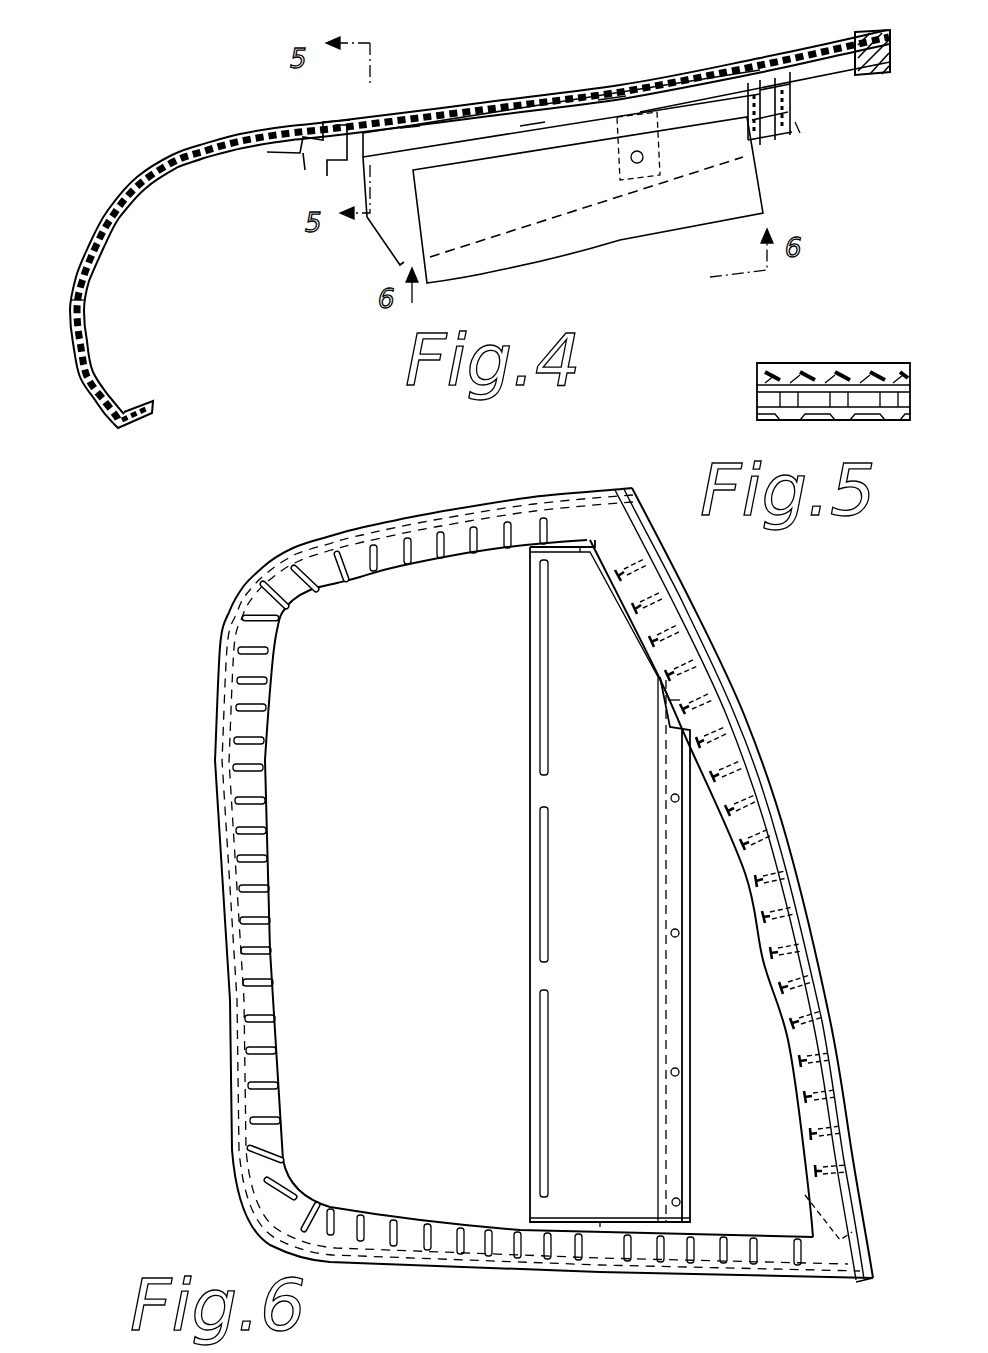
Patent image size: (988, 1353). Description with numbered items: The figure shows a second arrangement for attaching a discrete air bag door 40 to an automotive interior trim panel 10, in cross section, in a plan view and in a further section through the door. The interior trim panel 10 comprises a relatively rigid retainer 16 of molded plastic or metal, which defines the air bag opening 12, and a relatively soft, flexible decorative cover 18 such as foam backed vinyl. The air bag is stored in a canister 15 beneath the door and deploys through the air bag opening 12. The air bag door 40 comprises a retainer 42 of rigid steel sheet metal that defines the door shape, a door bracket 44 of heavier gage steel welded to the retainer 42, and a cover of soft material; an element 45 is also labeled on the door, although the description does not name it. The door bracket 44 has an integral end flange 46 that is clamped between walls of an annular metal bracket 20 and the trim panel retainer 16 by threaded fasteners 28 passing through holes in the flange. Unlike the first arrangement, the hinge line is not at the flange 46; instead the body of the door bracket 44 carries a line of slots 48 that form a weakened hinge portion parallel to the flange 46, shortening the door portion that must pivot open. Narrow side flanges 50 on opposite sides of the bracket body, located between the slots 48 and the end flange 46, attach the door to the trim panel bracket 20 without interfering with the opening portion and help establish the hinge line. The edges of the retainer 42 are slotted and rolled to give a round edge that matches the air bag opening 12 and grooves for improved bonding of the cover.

In FIG. 4, the interior trim panel 10 is at (193, 146).
In FIG. 4, the air bag opening 12 is at (433, 157).
In FIG. 4, the canister 15 is at (692, 213).
In FIG. 4, the retainer 16 is at (92, 350).
In FIG. 4, the cover 18 is at (78, 305).
In FIG. 4, the bracket 20 is at (377, 243).
In FIG. 4, the threaded fasteners 28 is at (800, 127).
In FIG. 4, the air bag door 40 is at (503, 104).
In FIG. 5, the air bag door 40 is at (857, 368).
In FIG. 6, the air bag door 40 is at (740, 712).
In FIG. 4, the retainer 42 is at (533, 127).
In FIG. 5, the retainer 42 is at (770, 365).
In FIG. 6, the retainer 42 is at (290, 983).
In FIG. 4, the door bracket 44 is at (657, 133).
In FIG. 6, the door bracket 44 is at (545, 978).
In FIG. 4, the seal lip 45 is at (437, 150).
In FIG. 5, the seal lip 45 is at (822, 363).
In FIG. 6, the seal lip 45 is at (216, 823).
In FIG. 4, the integral flange 46 is at (767, 103).
In FIG. 6, the integral flange 46 is at (677, 832).
In FIG. 4, the slots 48 is at (610, 93).
In FIG. 6, the slots 48 is at (545, 808).
In FIG. 4, the side flanges 50 is at (637, 183).
In FIG. 6, the side flanges 50 is at (587, 520).